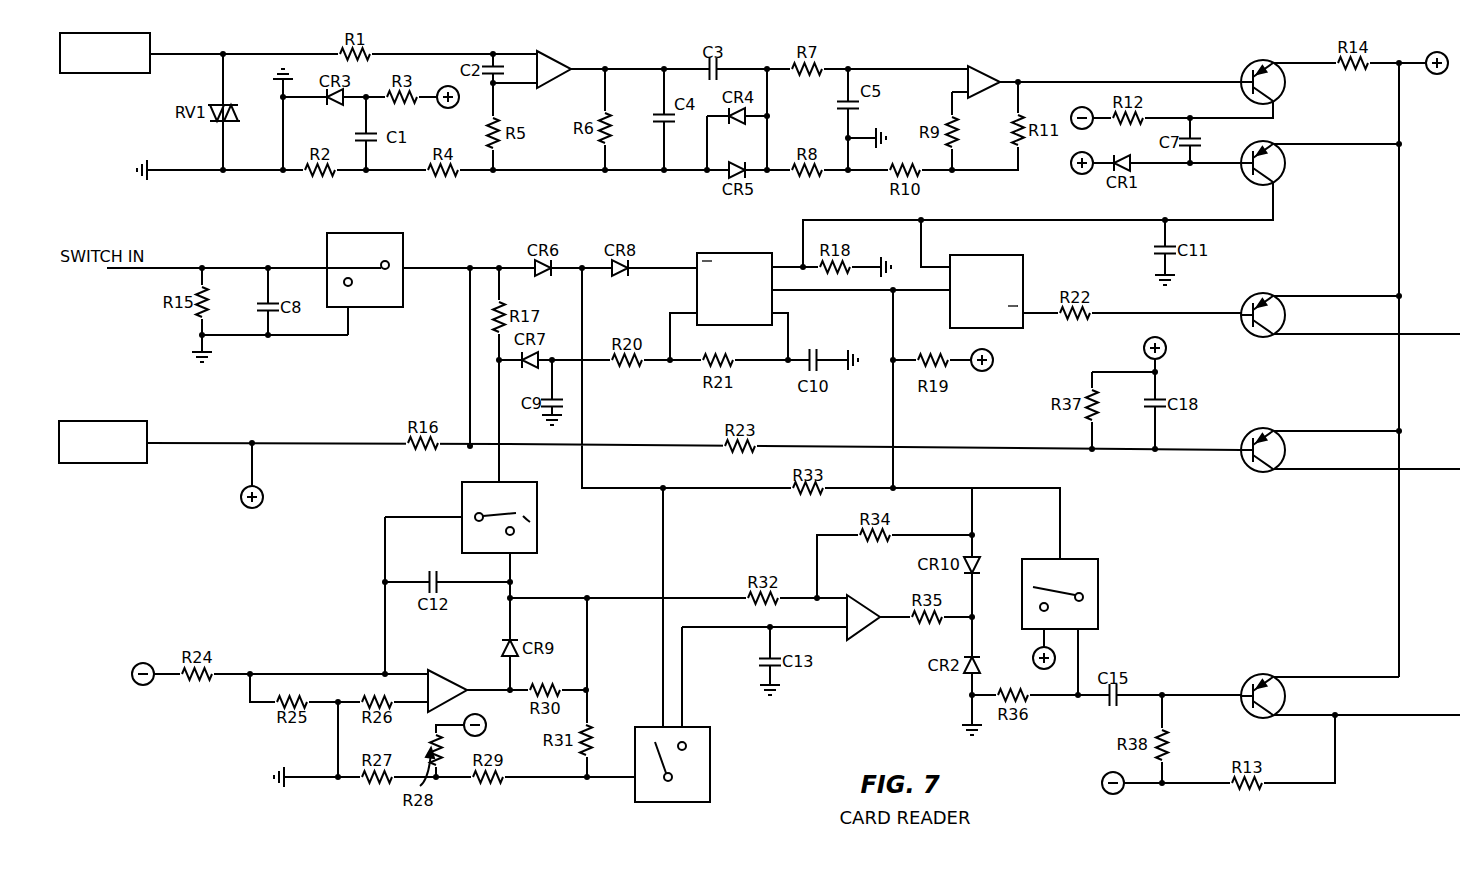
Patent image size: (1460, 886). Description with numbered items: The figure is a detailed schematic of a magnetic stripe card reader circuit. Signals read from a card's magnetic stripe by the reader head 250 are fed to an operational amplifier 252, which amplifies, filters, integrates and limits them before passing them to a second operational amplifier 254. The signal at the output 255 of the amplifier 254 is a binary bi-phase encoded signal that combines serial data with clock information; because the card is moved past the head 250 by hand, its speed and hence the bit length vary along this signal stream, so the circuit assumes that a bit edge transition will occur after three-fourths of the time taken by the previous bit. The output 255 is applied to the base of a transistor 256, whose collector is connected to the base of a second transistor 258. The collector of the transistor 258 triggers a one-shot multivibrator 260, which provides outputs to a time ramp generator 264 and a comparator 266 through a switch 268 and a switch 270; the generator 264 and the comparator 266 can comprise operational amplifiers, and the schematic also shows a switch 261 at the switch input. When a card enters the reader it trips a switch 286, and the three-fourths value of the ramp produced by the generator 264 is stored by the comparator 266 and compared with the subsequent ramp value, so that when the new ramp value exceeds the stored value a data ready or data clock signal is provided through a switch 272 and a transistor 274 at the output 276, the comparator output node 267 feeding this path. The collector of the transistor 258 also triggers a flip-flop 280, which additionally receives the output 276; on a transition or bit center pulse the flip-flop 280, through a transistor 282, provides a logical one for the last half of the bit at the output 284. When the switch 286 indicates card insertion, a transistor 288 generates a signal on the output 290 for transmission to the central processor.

The reader head 250 is at (110, 74).
The operational amplifier 252 is at (564, 57).
The second operational amplifier 254 is at (979, 67).
The output 255 is at (1018, 79).
The transistor 256 is at (1284, 83).
The second transistor 258 is at (1284, 164).
The one-shot multivibrator 260 is at (735, 253).
The switch 261 is at (365, 250).
The time ramp generator 264 is at (446, 678).
The comparator 266 is at (862, 606).
The amplifier output 267 is at (887, 622).
The switch 268 is at (538, 518).
The switch 270 is at (700, 773).
The switch 272 is at (1096, 581).
The transistor 274 is at (1247, 684).
The output 276 is at (1402, 718).
The flip-flop 280 is at (987, 255).
The transistor 282 is at (1249, 323).
The output 284 is at (1337, 336).
The switch 286 is at (109, 421).
The transistor 288 is at (1248, 458).
The output 290 is at (1339, 471).